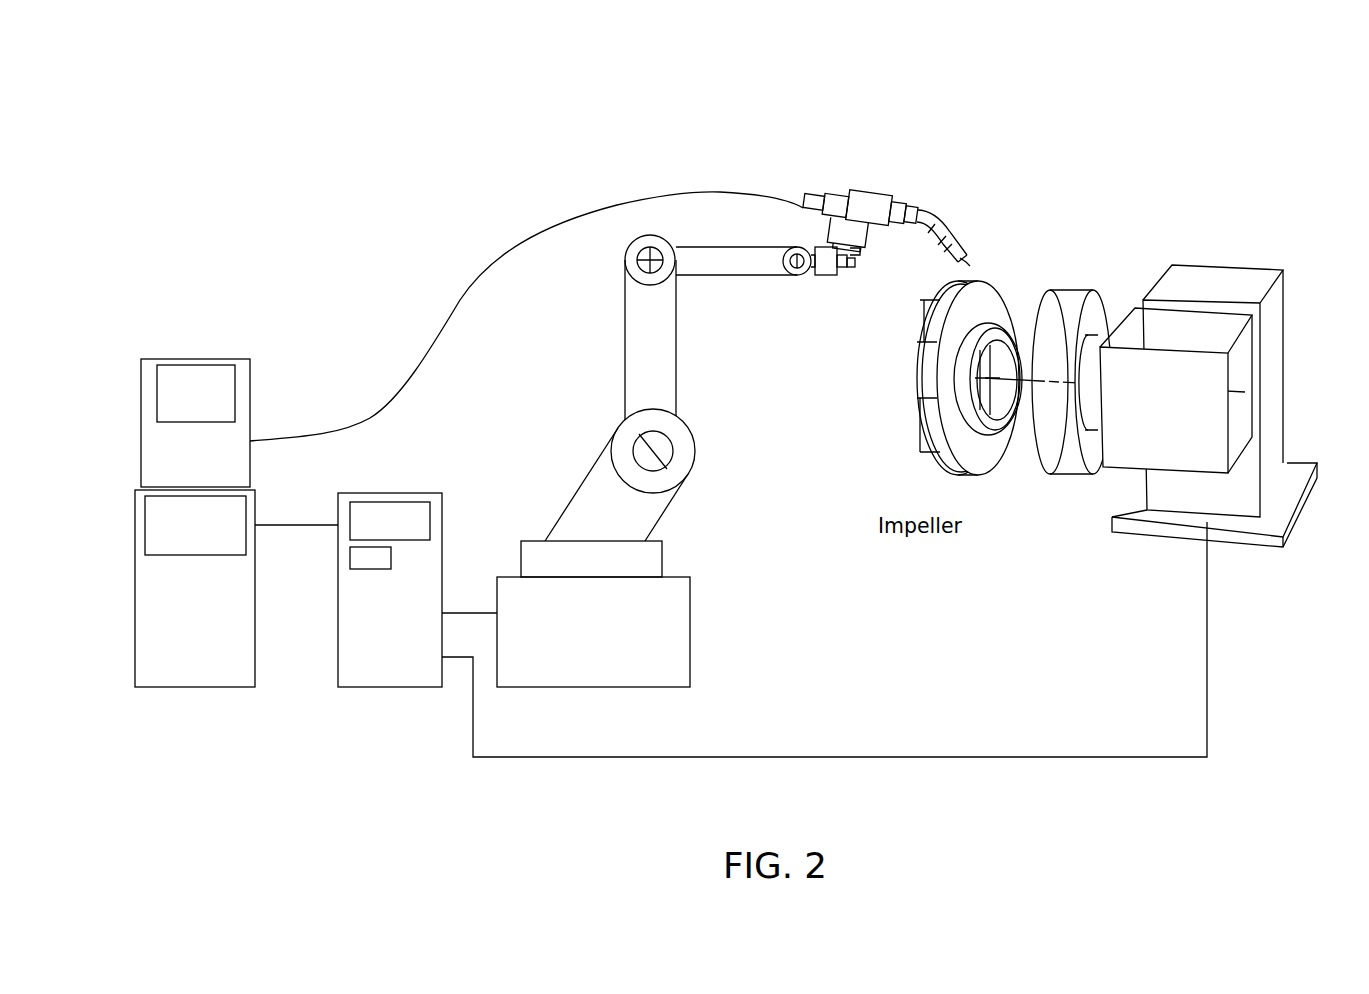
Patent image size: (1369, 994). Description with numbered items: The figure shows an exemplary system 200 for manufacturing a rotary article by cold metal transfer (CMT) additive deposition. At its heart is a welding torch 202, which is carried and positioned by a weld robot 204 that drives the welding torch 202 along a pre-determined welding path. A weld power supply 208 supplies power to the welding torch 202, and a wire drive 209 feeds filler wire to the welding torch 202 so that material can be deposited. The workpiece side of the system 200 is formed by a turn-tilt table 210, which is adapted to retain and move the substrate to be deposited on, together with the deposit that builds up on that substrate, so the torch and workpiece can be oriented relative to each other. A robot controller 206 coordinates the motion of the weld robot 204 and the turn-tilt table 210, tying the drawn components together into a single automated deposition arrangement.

The system 200 is at (387, 175).
The welding torch 202 is at (838, 197).
The weld robot 204 is at (583, 672).
The robot controller 206 is at (398, 670).
The weld power supply 208 is at (192, 672).
The wire drive 209 is at (148, 392).
The turn-tilt table 210 is at (1270, 337).